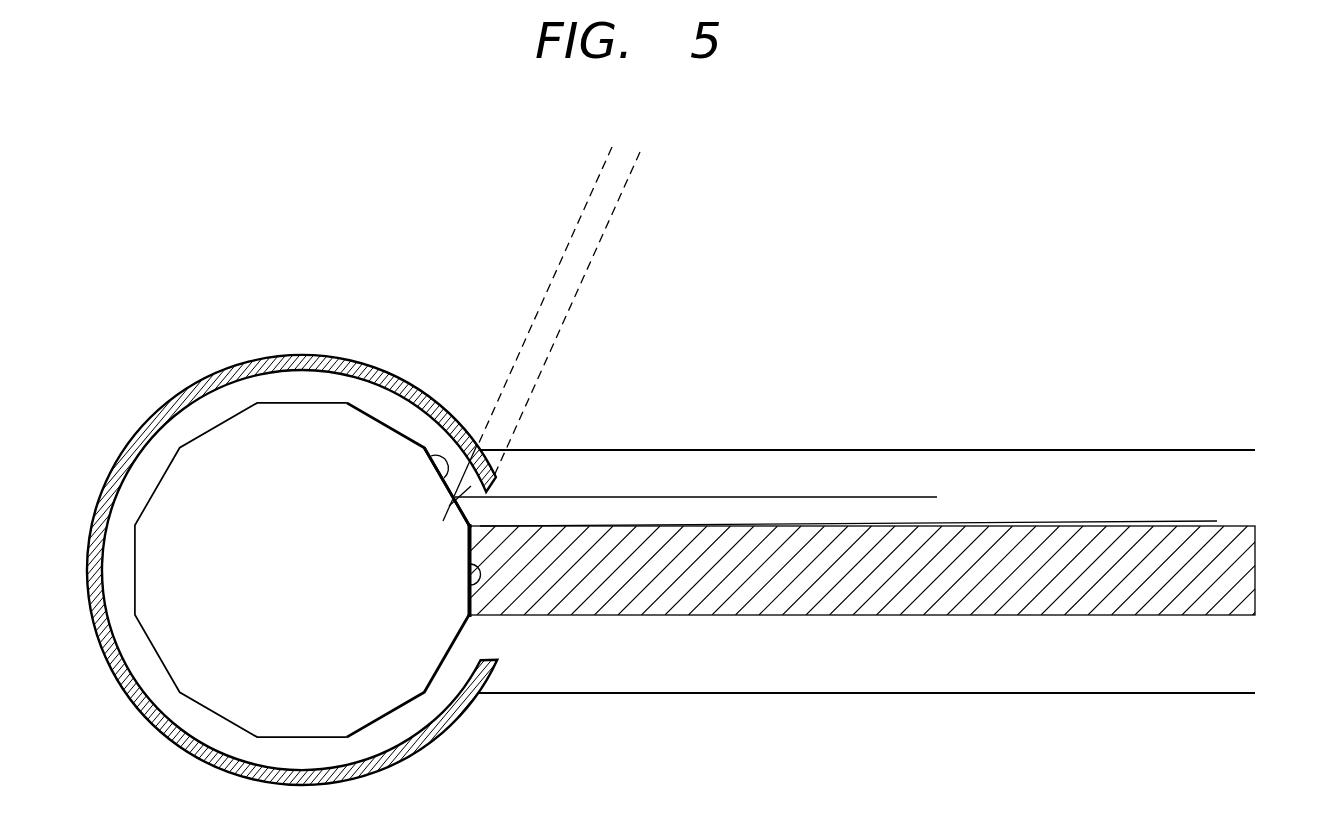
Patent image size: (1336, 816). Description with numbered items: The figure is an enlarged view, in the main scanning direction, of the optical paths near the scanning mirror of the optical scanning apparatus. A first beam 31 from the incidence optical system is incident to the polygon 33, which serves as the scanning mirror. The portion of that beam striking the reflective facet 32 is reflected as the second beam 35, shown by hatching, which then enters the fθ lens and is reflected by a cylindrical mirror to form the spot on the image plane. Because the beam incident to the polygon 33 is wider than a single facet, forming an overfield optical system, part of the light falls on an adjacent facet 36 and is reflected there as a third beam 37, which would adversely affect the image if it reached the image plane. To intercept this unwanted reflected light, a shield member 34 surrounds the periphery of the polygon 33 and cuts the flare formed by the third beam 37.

The first beam 31 is at (1197, 462).
The reflective facet 32 is at (470, 583).
The polygon 33 is at (300, 425).
The shield member 34 is at (419, 389).
The second beam 35 is at (1250, 578).
The adjacent facet 36 is at (446, 481).
The third beam 37 is at (458, 505).